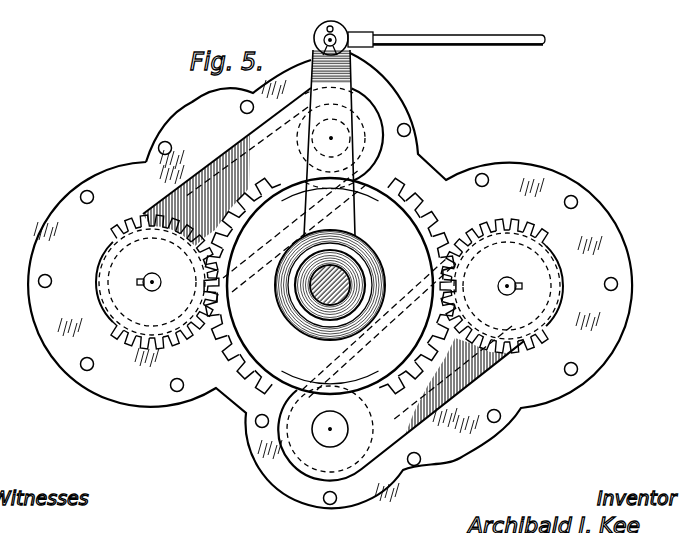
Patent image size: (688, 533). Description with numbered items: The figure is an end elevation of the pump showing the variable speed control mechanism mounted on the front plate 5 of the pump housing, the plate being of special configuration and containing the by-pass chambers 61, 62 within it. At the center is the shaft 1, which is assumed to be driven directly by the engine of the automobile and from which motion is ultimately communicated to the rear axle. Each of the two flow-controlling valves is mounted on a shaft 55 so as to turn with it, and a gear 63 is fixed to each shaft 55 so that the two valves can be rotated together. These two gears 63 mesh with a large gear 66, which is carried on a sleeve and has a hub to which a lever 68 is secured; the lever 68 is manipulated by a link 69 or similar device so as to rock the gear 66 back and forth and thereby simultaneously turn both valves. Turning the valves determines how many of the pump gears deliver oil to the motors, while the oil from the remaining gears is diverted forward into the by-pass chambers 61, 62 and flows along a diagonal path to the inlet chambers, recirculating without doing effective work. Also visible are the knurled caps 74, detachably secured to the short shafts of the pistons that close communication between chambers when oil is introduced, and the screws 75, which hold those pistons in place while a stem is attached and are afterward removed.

The shaft 1 is at (357, 285).
The front plate 5 is at (97, 392).
The shaft 55 is at (147, 283).
The by-pass chamber 61 is at (398, 405).
The by-pass chamber 62 is at (258, 148).
The gears 63 is at (111, 229).
The large gear 66 is at (412, 192).
The lever 68 is at (346, 74).
The link 69 is at (352, 30).
The knurled caps 74 is at (363, 109).
The screws 75 is at (311, 86).